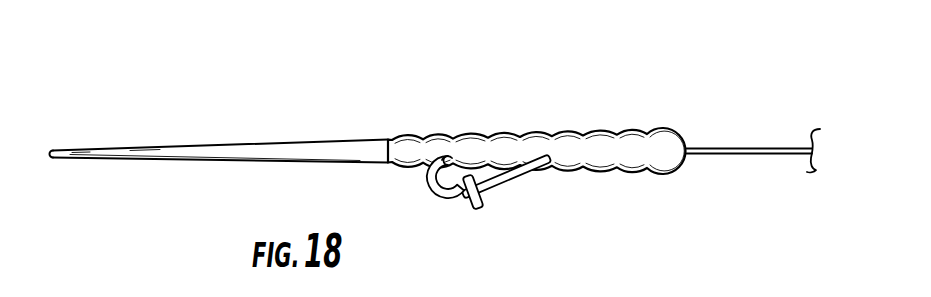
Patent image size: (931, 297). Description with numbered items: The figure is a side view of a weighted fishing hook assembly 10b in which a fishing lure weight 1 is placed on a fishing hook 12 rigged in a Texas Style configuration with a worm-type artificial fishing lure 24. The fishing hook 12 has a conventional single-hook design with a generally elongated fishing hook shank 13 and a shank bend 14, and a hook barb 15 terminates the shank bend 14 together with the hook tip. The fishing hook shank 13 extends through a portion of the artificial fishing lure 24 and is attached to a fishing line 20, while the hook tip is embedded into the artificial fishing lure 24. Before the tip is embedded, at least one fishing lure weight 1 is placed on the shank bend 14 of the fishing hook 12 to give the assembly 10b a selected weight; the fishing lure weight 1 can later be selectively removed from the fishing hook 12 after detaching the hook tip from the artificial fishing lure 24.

The fishing lure weight 1 is at (435, 149).
The weighted fishing hook assembly 10b is at (368, 126).
The fishing hook 12 is at (510, 198).
The fishing hook shank 13 is at (548, 170).
The shank bend 14 is at (428, 184).
The hook barb 15 is at (437, 156).
The fishing line 20 is at (773, 148).
The artificial fishing lure 24 is at (320, 158).